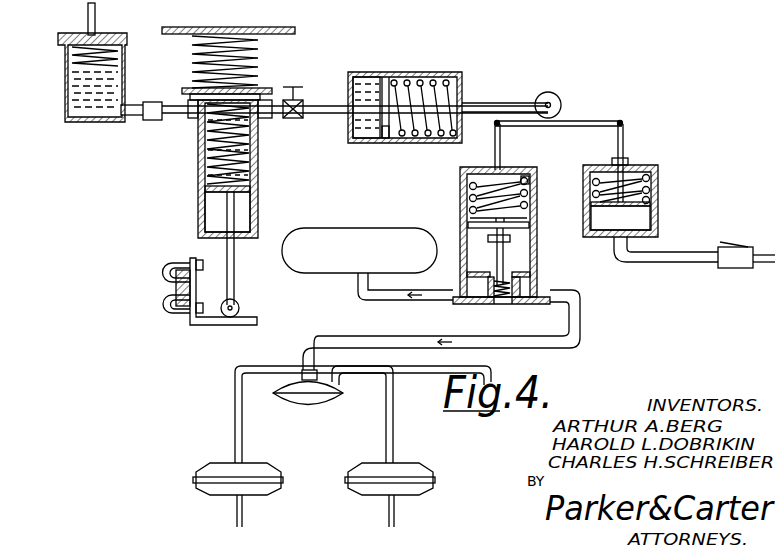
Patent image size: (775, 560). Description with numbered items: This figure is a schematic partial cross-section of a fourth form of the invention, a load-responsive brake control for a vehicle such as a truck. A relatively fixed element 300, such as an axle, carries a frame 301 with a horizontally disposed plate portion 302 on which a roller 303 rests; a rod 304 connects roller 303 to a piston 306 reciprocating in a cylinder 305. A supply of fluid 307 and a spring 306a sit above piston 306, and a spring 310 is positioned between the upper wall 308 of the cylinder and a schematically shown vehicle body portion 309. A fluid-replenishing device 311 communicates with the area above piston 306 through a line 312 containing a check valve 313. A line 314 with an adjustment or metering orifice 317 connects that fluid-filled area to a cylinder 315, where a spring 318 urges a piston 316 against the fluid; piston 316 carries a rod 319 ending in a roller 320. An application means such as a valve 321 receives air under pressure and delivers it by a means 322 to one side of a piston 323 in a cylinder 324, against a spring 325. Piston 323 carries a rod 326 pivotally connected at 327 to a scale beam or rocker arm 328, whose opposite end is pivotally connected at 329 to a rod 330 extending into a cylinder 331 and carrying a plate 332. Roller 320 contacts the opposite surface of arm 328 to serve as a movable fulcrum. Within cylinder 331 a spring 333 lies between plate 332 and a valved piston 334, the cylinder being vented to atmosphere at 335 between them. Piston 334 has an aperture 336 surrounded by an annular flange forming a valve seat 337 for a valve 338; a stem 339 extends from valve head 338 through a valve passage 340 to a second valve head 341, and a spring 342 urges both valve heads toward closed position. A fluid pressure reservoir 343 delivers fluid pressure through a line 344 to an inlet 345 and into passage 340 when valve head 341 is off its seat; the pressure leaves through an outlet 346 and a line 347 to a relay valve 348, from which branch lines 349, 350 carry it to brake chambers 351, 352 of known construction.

The relatively fixed element 300 is at (174, 288).
The frame 301 is at (192, 262).
The plate portion 302 is at (242, 326).
The roller 303 is at (241, 308).
The rod 304 is at (235, 290).
The cylinder 305 is at (198, 214).
The piston 306 is at (205, 190).
The spring 306a is at (250, 162).
The supply of fluid 307 is at (208, 158).
The upper wall 308 is at (186, 92).
The vehicle body portion 309 is at (178, 28).
The spring 310 is at (260, 62).
The fluid-replenishing device 311 is at (68, 96).
The line 312 is at (133, 116).
The check valve 313 is at (152, 121).
The line 314 is at (335, 114).
The cylinder 315 is at (388, 58).
The piston 316 is at (386, 140).
The adjustment or metering orifice 317 is at (330, 72).
The spring 318 is at (415, 78).
The rod 319 is at (480, 104).
The roller 320 is at (554, 97).
The valve 321 is at (745, 268).
The means 322 is at (676, 263).
The piston 323 is at (651, 204).
The cylinder 324 is at (660, 226).
The spring 325 is at (651, 182).
The rod 326 is at (624, 146).
The pivotal connection 327 is at (625, 122).
The scale beam or rocker arm 328 is at (595, 128).
The pivotal connection 329 is at (499, 127).
The rod 330 is at (494, 153).
The cylinder 331 is at (462, 205).
The plate 332 is at (530, 179).
The spring 333 is at (470, 187).
The valved piston 334 is at (530, 226).
The vent 335 is at (537, 206).
The aperture 336 is at (528, 223).
The valve seat 337 is at (507, 232).
The valve 338 is at (487, 238).
The stem 339 is at (497, 256).
The valve passage 340 is at (515, 265).
The valve head 341 is at (482, 300).
The spring 342 is at (503, 298).
The fluid pressure reservoir 343 is at (345, 227).
The line 344 is at (385, 302).
The inlet 345 is at (450, 301).
The outlet 346 is at (575, 303).
The line 347 is at (581, 331).
The relay valve 348 is at (322, 408).
The branch line 349 is at (235, 412).
The branch line 350 is at (396, 442).
The brake chamber 351 is at (228, 496).
The brake chamber 352 is at (382, 496).